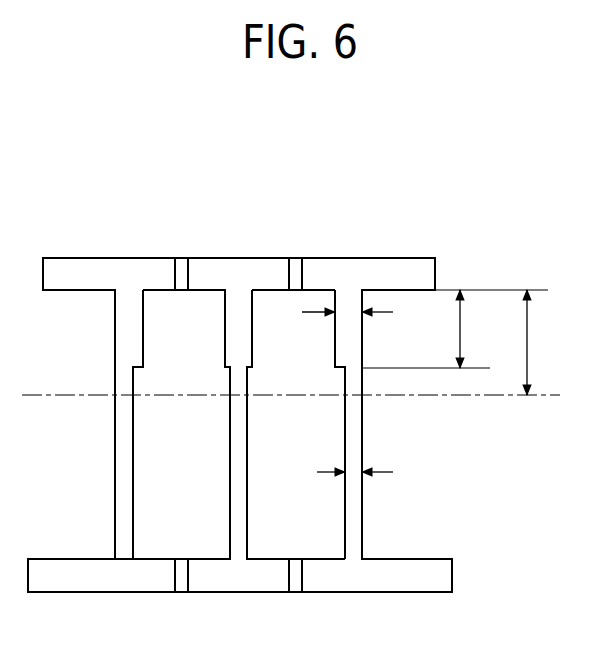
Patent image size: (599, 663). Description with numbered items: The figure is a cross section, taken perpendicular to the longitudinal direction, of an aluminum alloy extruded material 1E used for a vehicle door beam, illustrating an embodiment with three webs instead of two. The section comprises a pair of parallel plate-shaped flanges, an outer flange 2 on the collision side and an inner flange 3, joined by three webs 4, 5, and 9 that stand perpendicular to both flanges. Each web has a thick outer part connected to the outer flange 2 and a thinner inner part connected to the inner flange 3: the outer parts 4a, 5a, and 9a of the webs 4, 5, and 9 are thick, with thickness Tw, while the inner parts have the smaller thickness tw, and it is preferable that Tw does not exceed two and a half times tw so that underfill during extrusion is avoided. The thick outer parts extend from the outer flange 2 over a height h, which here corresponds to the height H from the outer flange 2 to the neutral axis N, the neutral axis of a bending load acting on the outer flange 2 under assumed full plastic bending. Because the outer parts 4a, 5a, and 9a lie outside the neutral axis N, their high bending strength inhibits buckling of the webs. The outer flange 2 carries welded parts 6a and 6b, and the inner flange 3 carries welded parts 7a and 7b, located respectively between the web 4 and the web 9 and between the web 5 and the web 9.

The aluminum alloy extruded material 1E is at (468, 177).
The outer flange 2 is at (88, 244).
The inner flange 3 is at (75, 599).
The web 4 is at (90, 441).
The outer part 4a is at (128, 327).
The web 5 is at (398, 433).
The outer part 5a is at (348, 327).
The web 9 is at (262, 421).
The outer part 9a is at (235, 327).
The welded part 6a is at (175, 274).
The welded part 6b is at (296, 273).
The welded part 7a is at (183, 586).
The welded part 7b is at (298, 586).
The neutral axis N is at (301, 397).
The thickness of the outer parts Tw is at (365, 315).
The thickness of the inner parts tw is at (373, 475).
The height of the outer parts h is at (455, 329).
The height from the outer flange to the cross section center H is at (542, 342).